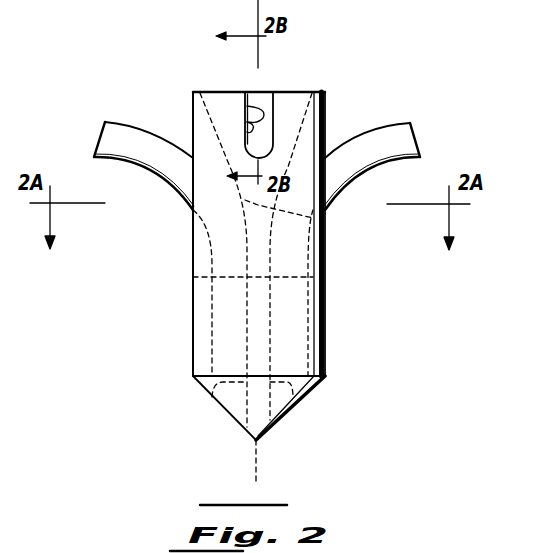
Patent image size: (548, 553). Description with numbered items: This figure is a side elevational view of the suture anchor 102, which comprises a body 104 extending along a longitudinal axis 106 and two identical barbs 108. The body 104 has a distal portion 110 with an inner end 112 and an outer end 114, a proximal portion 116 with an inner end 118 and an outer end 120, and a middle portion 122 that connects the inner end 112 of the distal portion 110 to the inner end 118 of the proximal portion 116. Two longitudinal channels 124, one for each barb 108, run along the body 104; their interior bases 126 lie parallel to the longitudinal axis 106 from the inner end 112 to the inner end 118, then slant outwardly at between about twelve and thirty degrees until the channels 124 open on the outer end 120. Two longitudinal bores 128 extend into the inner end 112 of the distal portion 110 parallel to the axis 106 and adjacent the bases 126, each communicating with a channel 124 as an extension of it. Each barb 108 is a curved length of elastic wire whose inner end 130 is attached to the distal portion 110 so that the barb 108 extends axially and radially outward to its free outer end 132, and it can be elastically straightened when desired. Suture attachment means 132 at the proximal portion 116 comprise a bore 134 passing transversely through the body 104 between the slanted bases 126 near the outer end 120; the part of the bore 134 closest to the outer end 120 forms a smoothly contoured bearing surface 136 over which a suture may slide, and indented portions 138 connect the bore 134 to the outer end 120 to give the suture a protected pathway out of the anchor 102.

The anchor 102 is at (152, 318).
The body 104 is at (184, 331).
The longitudinal axis 106 is at (259, 465).
The barbs 108 is at (124, 118).
The distal portion 110 is at (334, 329).
The inner end of distal portion 112 is at (327, 273).
The outer end of distal portion 114 is at (310, 380).
The proximal portion 116 is at (334, 113).
The inner end of proximal portion 118 is at (313, 218).
The outer end of proximal portion 120 is at (300, 92).
The middle portion 122 is at (334, 245).
The channels 124 is at (193, 265).
The interior bases of channels 126 is at (205, 115).
The longitudinal bores 128 is at (327, 356).
The inner end of barb 130 is at (212, 400).
The outer end of barb 132 is at (100, 138).
The bore 134 is at (245, 122).
The bearing surface 136 is at (248, 112).
The indented portions 138 is at (256, 92).